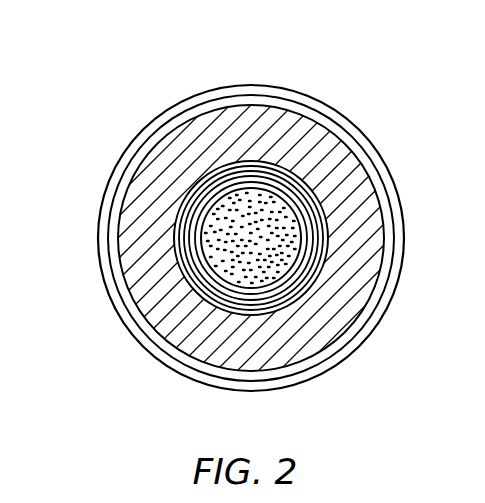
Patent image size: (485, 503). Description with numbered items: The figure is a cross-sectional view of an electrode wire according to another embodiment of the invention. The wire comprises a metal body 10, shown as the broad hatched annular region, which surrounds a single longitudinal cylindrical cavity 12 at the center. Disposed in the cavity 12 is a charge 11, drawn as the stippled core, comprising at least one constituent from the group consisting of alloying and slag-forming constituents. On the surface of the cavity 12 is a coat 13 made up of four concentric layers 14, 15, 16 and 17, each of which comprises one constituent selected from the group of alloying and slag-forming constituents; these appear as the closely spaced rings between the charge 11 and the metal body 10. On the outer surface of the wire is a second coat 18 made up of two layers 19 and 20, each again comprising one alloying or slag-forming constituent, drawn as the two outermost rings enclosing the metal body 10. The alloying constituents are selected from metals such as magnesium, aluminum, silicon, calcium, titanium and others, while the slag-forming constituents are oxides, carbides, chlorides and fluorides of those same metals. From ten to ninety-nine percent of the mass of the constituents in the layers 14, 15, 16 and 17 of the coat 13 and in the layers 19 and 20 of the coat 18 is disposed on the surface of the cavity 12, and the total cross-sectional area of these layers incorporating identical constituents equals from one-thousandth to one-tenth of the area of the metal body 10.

The metal body 10 is at (342, 172).
The charge 11 is at (287, 254).
The longitudinal cylindrical cavity 12 is at (293, 270).
The coat 13 is at (178, 290).
The layer 14 is at (185, 265).
The layer 15 is at (190, 234).
The layer 16 is at (192, 230).
The layer 17 is at (188, 210).
The coat 18 is at (197, 108).
The layer 19 is at (228, 92).
The layer 20 is at (317, 100).